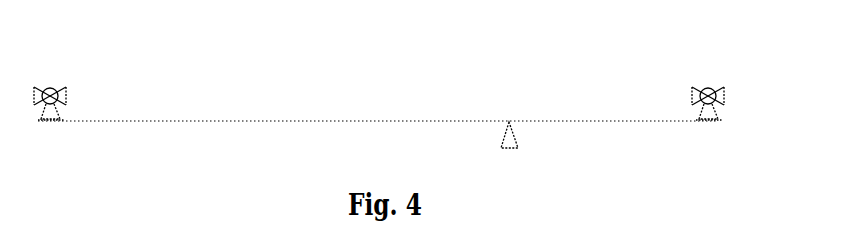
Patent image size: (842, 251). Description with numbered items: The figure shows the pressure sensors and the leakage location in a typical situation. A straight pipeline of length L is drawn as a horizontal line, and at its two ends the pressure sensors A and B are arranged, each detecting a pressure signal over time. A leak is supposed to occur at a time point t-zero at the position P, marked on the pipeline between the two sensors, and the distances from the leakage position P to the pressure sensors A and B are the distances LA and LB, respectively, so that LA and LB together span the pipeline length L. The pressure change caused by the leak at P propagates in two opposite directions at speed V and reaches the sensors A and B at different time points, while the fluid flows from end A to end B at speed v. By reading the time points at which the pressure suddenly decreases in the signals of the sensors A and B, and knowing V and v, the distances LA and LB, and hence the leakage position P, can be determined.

The pressure sensor A is at (50, 118).
The pressure sensor B is at (709, 118).
The leakage position P is at (510, 114).
The pipeline length L is at (706, 28).
The distance from leakage position to sensor A LA is at (55, 70).
The distance from leakage position to sensor B LB is at (525, 70).